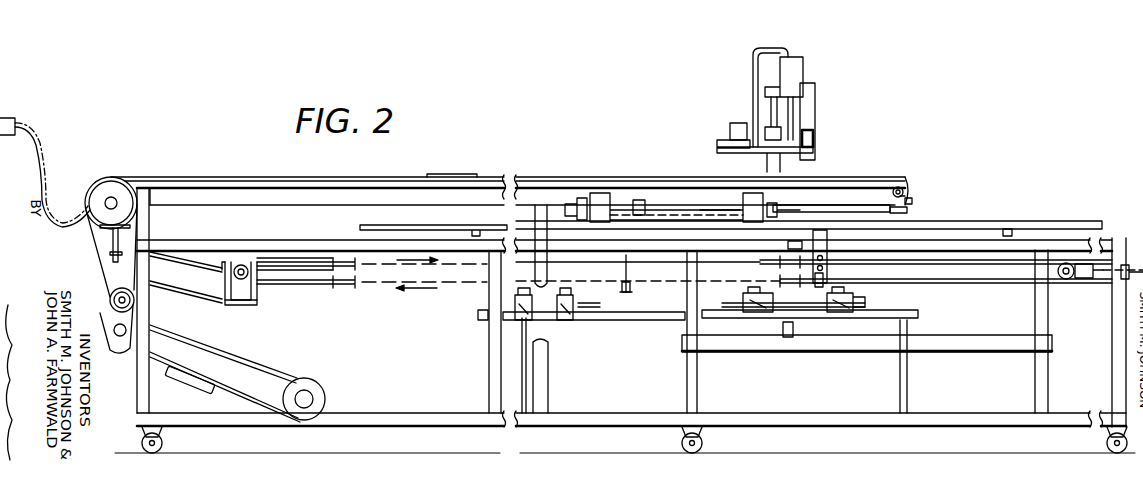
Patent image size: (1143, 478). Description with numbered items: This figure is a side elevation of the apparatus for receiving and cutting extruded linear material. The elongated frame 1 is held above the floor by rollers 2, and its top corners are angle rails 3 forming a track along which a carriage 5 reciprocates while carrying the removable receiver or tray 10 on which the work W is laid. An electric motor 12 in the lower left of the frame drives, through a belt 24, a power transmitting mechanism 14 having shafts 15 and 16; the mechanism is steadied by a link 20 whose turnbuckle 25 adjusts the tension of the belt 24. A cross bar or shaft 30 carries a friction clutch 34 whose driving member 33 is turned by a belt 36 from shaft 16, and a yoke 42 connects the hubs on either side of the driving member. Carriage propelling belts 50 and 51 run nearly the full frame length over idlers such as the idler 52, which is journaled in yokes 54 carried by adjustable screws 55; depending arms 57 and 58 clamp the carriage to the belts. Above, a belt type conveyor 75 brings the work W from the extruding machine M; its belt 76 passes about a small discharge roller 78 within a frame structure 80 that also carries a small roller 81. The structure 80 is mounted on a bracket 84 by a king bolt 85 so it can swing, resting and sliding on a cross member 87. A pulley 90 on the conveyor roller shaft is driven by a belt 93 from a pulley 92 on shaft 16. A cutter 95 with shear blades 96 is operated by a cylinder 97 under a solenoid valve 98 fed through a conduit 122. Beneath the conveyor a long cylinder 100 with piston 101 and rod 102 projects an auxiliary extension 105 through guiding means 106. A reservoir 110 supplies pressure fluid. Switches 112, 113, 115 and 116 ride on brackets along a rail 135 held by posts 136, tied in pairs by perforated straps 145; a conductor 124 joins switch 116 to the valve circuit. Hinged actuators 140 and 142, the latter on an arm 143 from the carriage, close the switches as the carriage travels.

The frame 1 is at (135, 386).
The rollers 2 is at (163, 443).
The angle rails 3 is at (185, 245).
The carriage 5 is at (788, 247).
The receiver or tray 10 is at (990, 225).
The electric motor 12 is at (327, 394).
The power transmitting mechanism 14 is at (110, 296).
The shaft 15 is at (115, 330).
The shaft 16 is at (108, 316).
The link 20 is at (258, 256).
The belt 24 is at (228, 356).
The turnbuckle 25 is at (176, 373).
The cross bar or shaft 30 is at (241, 265).
The driving member 33 is at (245, 301).
The clutch 34 is at (206, 262).
The belt 36 is at (170, 300).
The U-shaped frame or yoke 42 is at (226, 305).
The carriage propelling belt 50 is at (310, 281).
The carriage propelling belt 51 is at (352, 281).
The idler 52 is at (1071, 280).
The yokes 54 is at (1083, 274).
The screws 55 is at (1109, 278).
The arm 57 is at (830, 250).
The arm 58 is at (828, 287).
The belt type conveyor 75 is at (552, 180).
The conveyor belt 76 is at (197, 178).
The roller 78 is at (900, 186).
The frame structure 80 is at (381, 190).
The roller 81 is at (912, 202).
The bracket 84 is at (112, 255).
The king bolt 85 is at (103, 240).
The cross member 87 is at (534, 212).
The pulley 90 is at (123, 190).
The pulley 92 is at (105, 286).
The belt 93 is at (106, 178).
The cutter 95 is at (774, 73).
The shear blades 96 is at (815, 158).
The cylinder 97 is at (800, 68).
The solenoid valve 98 is at (735, 125).
The pressure fluid cylinder 100 is at (660, 207).
The piston 101 is at (633, 205).
The piston rod 102 is at (730, 208).
The auxiliary conveyor or extension 105 is at (810, 208).
The guiding means 106 is at (895, 216).
The reservoir 110 is at (930, 339).
The switch 112 is at (853, 298).
The switch 113 is at (505, 296).
The switch 115 is at (746, 310).
The switch 116 is at (558, 320).
The conduit 122 is at (770, 48).
The conductor 124 is at (718, 142).
The rail 135 is at (668, 313).
The posts 136 is at (524, 362).
The hinged actuator 140 is at (632, 287).
The hinged actuator 142 is at (623, 289).
The arm 143 is at (628, 272).
The perforated straps 145 is at (590, 313).
The extruding machine M is at (0, 73).
The work W is at (38, 152).